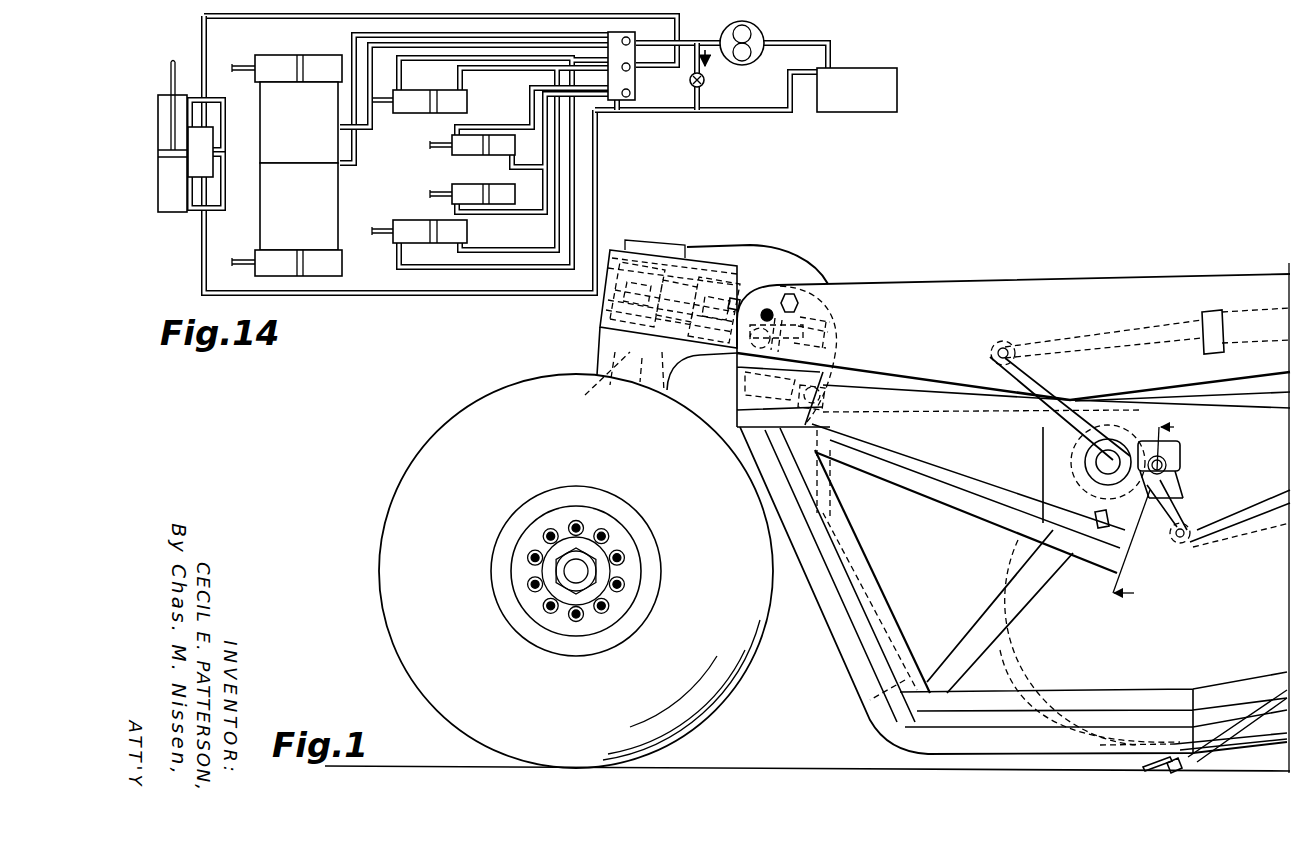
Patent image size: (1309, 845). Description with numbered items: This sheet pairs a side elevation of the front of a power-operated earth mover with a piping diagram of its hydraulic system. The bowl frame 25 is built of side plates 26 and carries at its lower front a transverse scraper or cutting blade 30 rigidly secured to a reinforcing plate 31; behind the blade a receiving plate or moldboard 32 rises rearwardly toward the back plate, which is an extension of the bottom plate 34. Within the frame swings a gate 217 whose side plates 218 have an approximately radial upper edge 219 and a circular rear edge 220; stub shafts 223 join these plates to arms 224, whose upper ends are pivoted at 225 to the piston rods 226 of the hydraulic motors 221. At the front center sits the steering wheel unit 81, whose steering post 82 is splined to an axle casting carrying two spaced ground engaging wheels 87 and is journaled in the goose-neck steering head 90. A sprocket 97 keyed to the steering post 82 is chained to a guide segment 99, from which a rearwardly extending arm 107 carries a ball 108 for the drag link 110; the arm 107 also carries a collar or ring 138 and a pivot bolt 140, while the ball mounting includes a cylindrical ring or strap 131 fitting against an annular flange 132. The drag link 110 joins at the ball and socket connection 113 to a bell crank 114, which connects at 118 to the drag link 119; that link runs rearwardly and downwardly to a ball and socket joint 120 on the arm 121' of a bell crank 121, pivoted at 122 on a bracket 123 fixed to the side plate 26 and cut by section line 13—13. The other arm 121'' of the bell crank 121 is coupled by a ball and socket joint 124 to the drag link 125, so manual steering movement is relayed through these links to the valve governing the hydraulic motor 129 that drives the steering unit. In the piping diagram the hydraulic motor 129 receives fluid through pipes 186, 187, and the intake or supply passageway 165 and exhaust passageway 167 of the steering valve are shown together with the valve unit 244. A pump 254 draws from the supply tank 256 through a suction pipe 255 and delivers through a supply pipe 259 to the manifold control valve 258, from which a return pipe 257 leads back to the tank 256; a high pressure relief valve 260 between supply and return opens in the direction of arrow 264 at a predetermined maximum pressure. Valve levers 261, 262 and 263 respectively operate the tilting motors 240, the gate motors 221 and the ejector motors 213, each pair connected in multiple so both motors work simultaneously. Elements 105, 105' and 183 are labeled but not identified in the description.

In FIG. 14, the control rod 183 is at (172, 70).
In FIG. 14, the intake or supply passageway 165 is at (206, 42).
In FIG. 14, the exhaust passageway 167 is at (202, 257).
In FIG. 14, the pipe 186 is at (215, 100).
In FIG. 14, the pipe 187 is at (216, 211).
In FIG. 14, the extensible hydraulic motors 240 is at (290, 84).
In FIG. 14, the valve unit 244 is at (226, 142).
In FIG. 14, the hydraulic motors 221 is at (409, 114).
In FIG. 1, the hydraulic motors 221 is at (1243, 311).
In FIG. 14, the hydraulic motors 213 is at (497, 134).
In FIG. 14, the hydraulic motor 129 is at (154, 170).
In FIG. 14, the manifold control valve 258 is at (617, 101).
In FIG. 14, the valve control lever 261 is at (630, 40).
In FIG. 14, the valve control lever 262 is at (632, 69).
In FIG. 14, the valve control lever 263 is at (632, 93).
In FIG. 14, the supply pipe 259 is at (708, 42).
In FIG. 14, the pump 254 is at (762, 30).
In FIG. 14, the suction pipe 255 is at (832, 42).
In FIG. 14, the supply tank 256 is at (898, 80).
In FIG. 14, the return pipe 257 is at (755, 113).
In FIG. 14, the arrow 264 is at (709, 56).
In FIG. 14, the high pressure relief valve 260 is at (704, 83).
In FIG. 1, the steering wheel unit 81 is at (572, 365).
In FIG. 1, the steering post 82 is at (596, 385).
In FIG. 1, the ground engaging wheels 87 is at (410, 488).
In FIG. 1, the steering head 90 is at (812, 255).
In FIG. 1, the sprocket 97 is at (602, 306).
In FIG. 1, the guide segment 99 is at (673, 302).
In FIG. 1, the gear 105 is at (672, 270).
In FIG. 1, the gear 105' is at (642, 367).
In FIG. 1, the rearwardly extending arm 107 is at (735, 302).
In FIG. 1, the drag link 110 is at (775, 313).
In FIG. 1, the ball 108 is at (795, 302).
In FIG. 1, the annular flange 132 is at (802, 317).
In FIG. 1, the cylindrical ring or strap 131 is at (798, 326).
In FIG. 1, the collar or ring 138 is at (794, 343).
In FIG. 1, the bolt 140 is at (772, 312).
In FIG. 1, the ball and socket joint connection 113 is at (737, 353).
In FIG. 1, the bell crank 114 is at (787, 382).
In FIG. 1, the connection 118 is at (783, 406).
In FIG. 1, the drag link 119 is at (838, 392).
In FIG. 1, the upper edge 219 is at (965, 411).
In FIG. 1, the pivot 225 is at (1004, 346).
In FIG. 1, the piston rods 226 is at (1088, 337).
In FIG. 1, the arms 224 is at (1067, 411).
In FIG. 1, the stub shafts 223 is at (1105, 461).
In FIG. 1, the section line 13 is at (1154, 511).
In FIG. 1, the bracket 123 is at (1181, 445).
In FIG. 1, the pivot 122 is at (1167, 465).
In FIG. 1, the arm of bell crank 121'' is at (1192, 484).
In FIG. 1, the arm of bell crank 121' is at (1084, 554).
In FIG. 1, the bell crank 121 is at (1186, 547).
In FIG. 1, the drag link 125 is at (1234, 514).
In FIG. 1, the ball and socket joint 124 is at (1200, 546).
In FIG. 1, the ball and socket joint connection 120 is at (1158, 520).
In FIG. 1, the side plates 26 is at (968, 558).
In FIG. 1, the circular rear edge 220 is at (1014, 651).
In FIG. 1, the side plates of gate 218 is at (1014, 681).
In FIG. 1, the gate 217 is at (908, 676).
In FIG. 1, the bowl frame 25 is at (866, 730).
In FIG. 1, the receiving plate or moldboard 32 is at (1278, 693).
In FIG. 1, the bottom plate 34 is at (1248, 740).
In FIG. 1, the scraper or cutting blade 30 is at (1160, 772).
In FIG. 1, the reinforcing plate 31 is at (1183, 766).